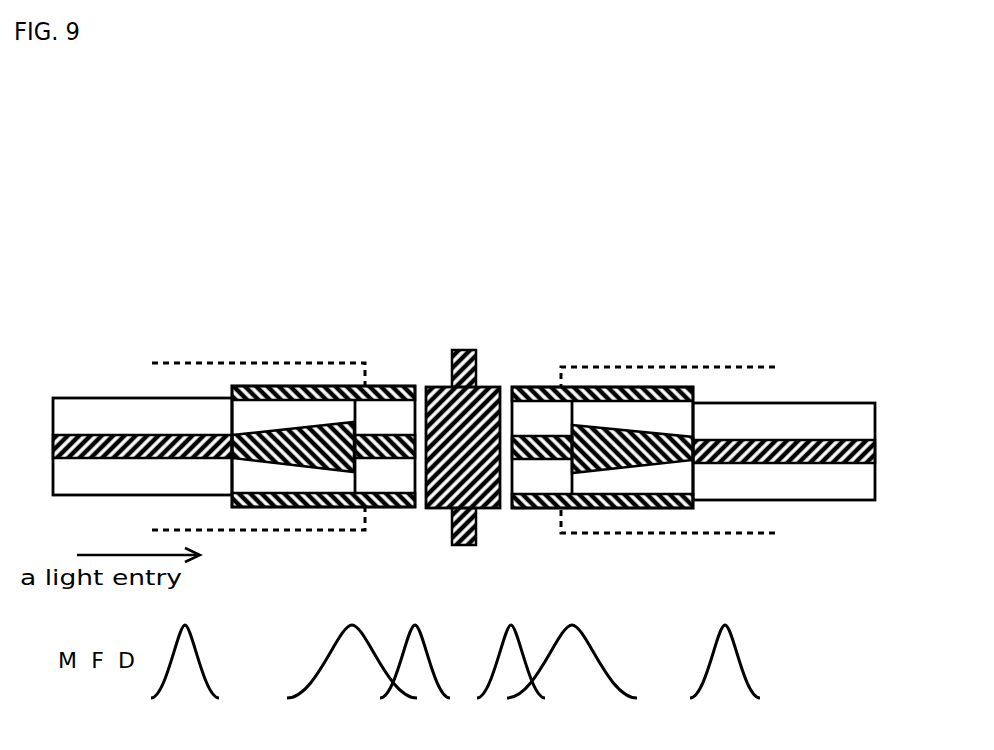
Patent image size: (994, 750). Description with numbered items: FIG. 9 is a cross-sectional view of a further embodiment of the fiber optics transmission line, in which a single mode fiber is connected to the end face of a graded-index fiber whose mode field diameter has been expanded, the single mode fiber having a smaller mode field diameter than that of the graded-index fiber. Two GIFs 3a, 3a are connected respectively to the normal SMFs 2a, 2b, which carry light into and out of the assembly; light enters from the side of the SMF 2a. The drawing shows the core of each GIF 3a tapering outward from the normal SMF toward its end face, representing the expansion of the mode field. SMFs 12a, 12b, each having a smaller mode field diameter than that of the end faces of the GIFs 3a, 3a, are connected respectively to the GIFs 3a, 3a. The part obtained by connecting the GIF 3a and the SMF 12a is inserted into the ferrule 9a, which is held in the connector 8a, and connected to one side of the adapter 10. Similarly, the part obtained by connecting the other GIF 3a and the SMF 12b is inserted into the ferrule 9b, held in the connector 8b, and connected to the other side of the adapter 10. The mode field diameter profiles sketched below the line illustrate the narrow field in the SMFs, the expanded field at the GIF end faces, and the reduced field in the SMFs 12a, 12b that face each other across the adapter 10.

The normal SMF 2a is at (123, 420).
The normal SMF 2b is at (795, 413).
The GIF 3a is at (282, 417).
The connector 8a is at (233, 362).
The connector 8b is at (700, 368).
The ferrule 9a is at (348, 412).
The ferrule 9b is at (586, 400).
The adapter 10 is at (470, 347).
The SMF having a smaller MFD 12a is at (387, 412).
The SMF having a smaller MFD 12b is at (535, 410).